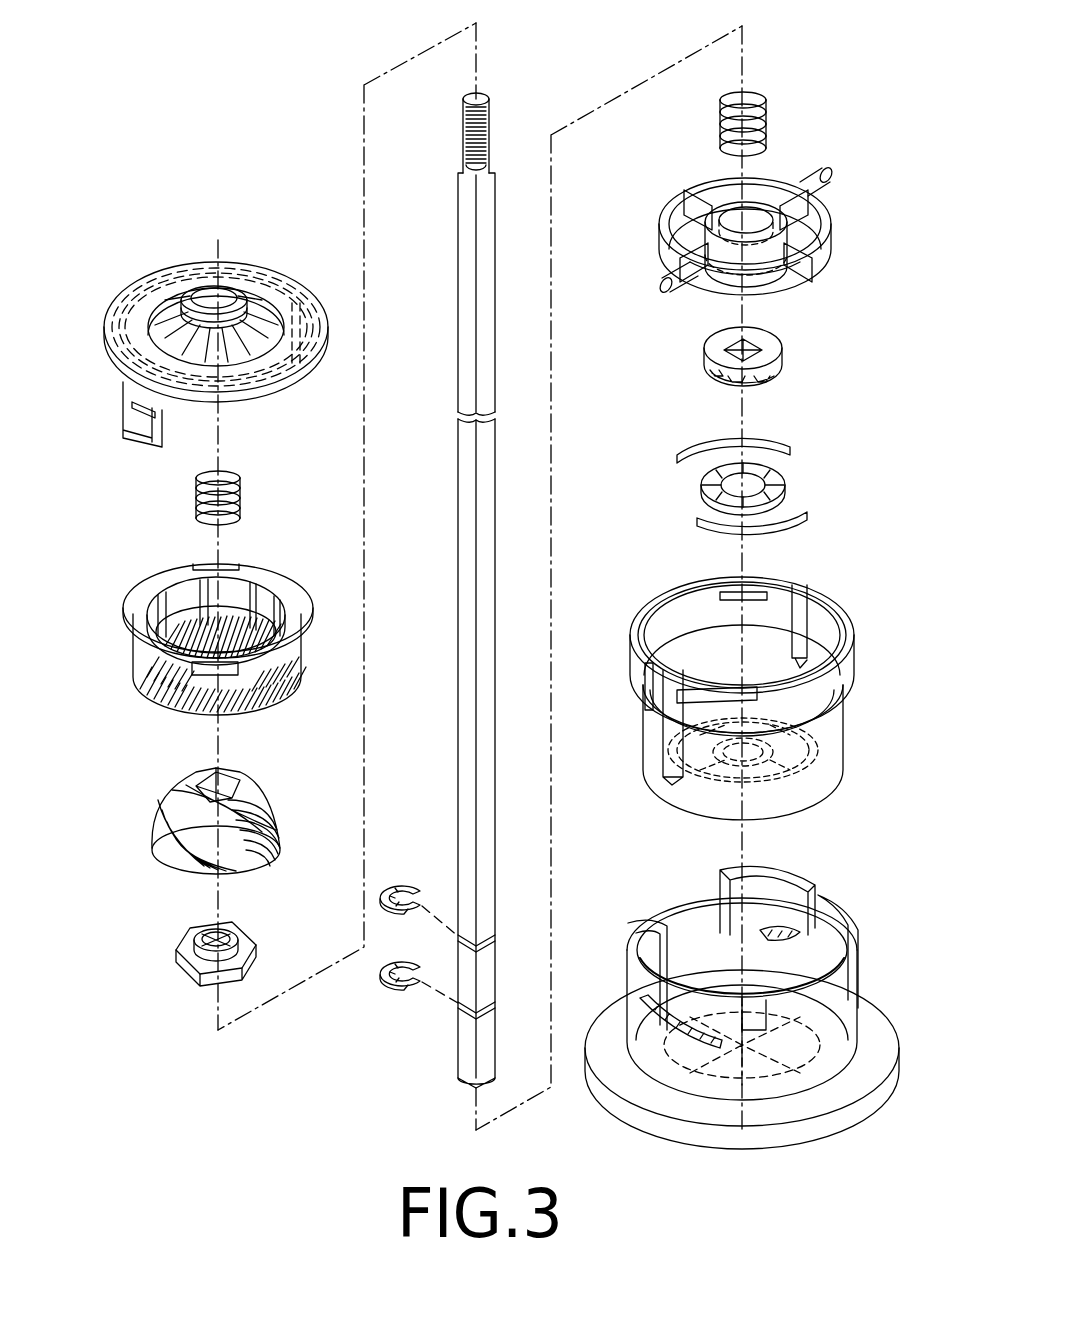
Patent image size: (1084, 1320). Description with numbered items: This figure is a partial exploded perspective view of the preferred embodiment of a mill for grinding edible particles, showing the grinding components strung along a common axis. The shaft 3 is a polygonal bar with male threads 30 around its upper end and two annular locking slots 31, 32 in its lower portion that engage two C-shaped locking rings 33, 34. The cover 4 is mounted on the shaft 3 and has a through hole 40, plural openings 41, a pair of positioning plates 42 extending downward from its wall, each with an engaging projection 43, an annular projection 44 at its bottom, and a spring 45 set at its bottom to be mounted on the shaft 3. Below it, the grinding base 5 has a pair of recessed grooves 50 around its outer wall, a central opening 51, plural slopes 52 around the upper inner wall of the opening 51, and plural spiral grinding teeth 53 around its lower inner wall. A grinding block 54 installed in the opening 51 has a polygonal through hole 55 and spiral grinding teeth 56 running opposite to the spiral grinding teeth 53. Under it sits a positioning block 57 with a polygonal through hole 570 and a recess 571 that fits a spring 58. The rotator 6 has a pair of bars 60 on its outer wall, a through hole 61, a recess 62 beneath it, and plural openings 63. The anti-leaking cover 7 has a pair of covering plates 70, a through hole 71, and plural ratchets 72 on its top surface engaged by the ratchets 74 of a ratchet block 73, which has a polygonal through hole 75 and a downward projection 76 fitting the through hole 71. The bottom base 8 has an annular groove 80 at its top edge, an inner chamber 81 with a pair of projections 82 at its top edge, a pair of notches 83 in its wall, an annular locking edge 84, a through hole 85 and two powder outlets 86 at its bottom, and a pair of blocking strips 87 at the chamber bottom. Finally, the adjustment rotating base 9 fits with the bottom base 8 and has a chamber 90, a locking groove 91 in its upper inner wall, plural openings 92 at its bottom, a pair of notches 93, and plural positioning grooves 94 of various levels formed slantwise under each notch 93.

The shaft 3 is at (471, 590).
The male threads 30 is at (473, 148).
The annular locking slot 31 is at (496, 946).
The annular locking slot 32 is at (496, 1013).
The C-shaped locking ring 33 is at (402, 888).
The C-shaped locking ring 34 is at (402, 985).
The cover 4 is at (210, 347).
The through hole 40 is at (206, 298).
The openings 41 is at (215, 352).
The positioning plates 42 is at (152, 445).
The engaging projection 43 is at (133, 430).
The annular projection 44 is at (256, 400).
The spring 45 is at (242, 498).
The grinding base 5 is at (229, 641).
The recessed grooves 50 is at (236, 566).
The opening 51 is at (218, 640).
The slopes 52 is at (185, 598).
The spiral grinding teeth 53 is at (286, 703).
The grinding block 54 is at (221, 822).
The polygonal through hole 55 is at (196, 790).
The spiral grinding teeth 56 is at (195, 862).
The positioning block 57 is at (223, 965).
The polygonal through hole 570 is at (195, 936).
The recess 571 is at (192, 977).
The spring 58 is at (768, 112).
The rotator 6 is at (736, 230).
The bars 60 is at (822, 190).
The through hole 61 is at (752, 224).
The recess 62 is at (762, 278).
The openings 63 is at (682, 240).
The anti-leaking cover 7 is at (734, 494).
The covering plates 70 is at (770, 450).
The through hole 71 is at (710, 507).
The ratchets 72 is at (710, 486).
The ratchet block 73 is at (749, 382).
The ratchets 74 is at (745, 390).
The polygonal through hole 75 is at (763, 350).
The projection 76 is at (752, 392).
The bottom base 8 is at (749, 776).
The annular groove 80 is at (748, 659).
The chamber 81 is at (688, 626).
The projections 82 is at (726, 592).
The notches 83 is at (808, 615).
The annular locking edge 84 is at (645, 702).
The through hole 85 is at (760, 772).
The powder outlets 86 is at (660, 782).
The blocking strips 87 is at (840, 752).
The adjustment rotating base 9 is at (733, 1017).
The chamber 90 is at (802, 975).
The locking groove 91 is at (790, 880).
The openings 92 is at (830, 1062).
The notches 93 is at (820, 905).
The positioning grooves 94 is at (842, 936).